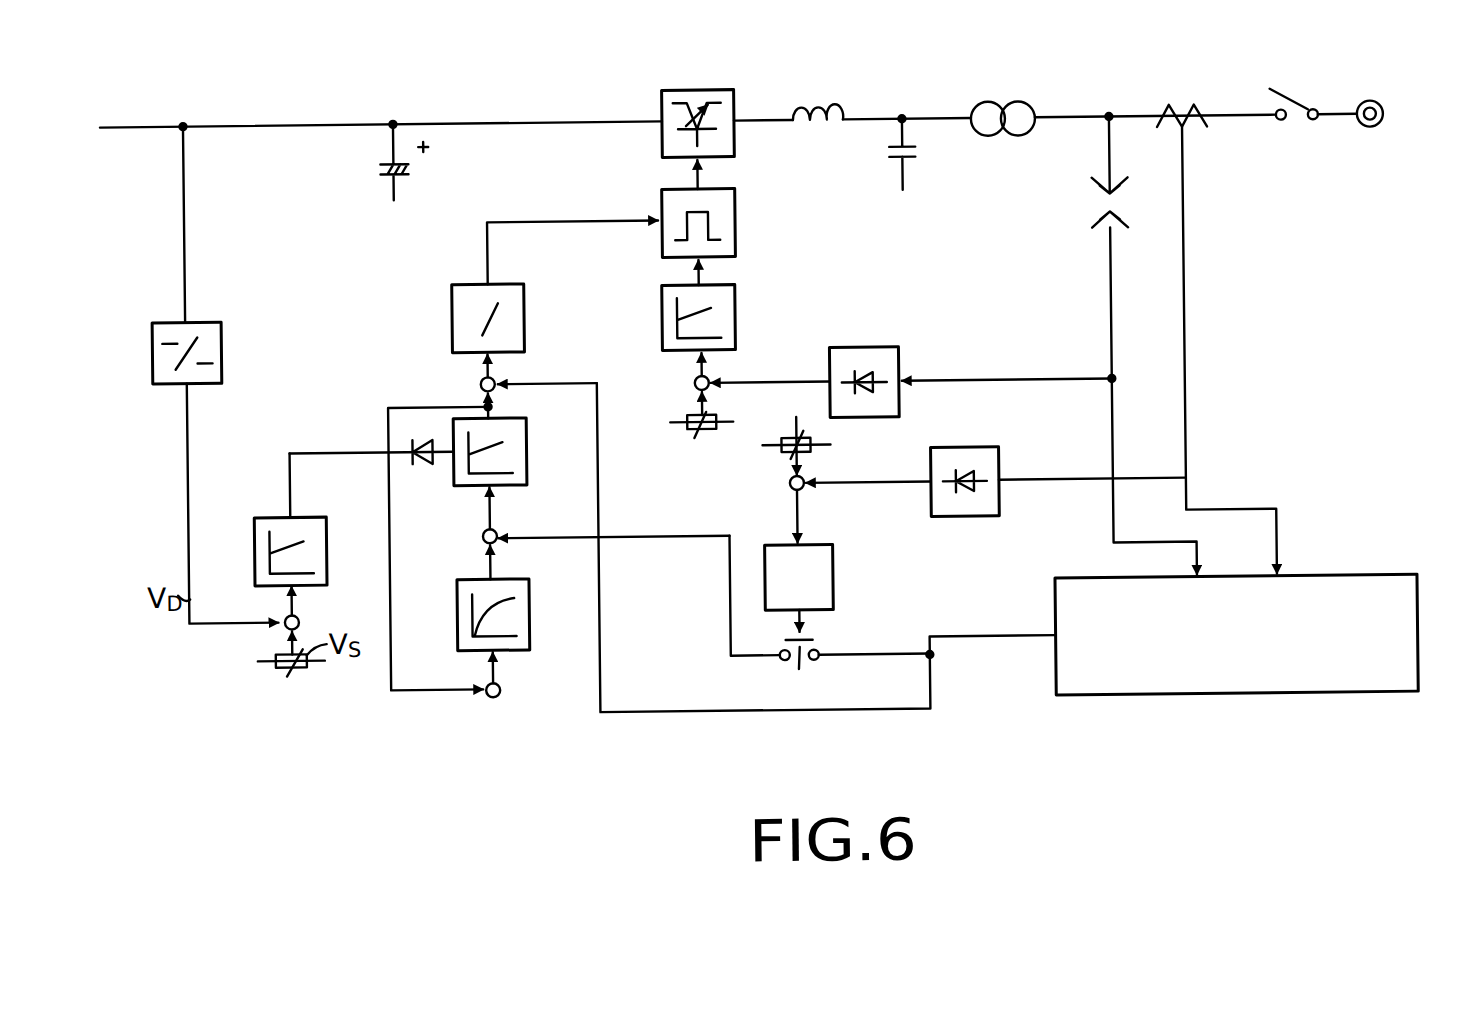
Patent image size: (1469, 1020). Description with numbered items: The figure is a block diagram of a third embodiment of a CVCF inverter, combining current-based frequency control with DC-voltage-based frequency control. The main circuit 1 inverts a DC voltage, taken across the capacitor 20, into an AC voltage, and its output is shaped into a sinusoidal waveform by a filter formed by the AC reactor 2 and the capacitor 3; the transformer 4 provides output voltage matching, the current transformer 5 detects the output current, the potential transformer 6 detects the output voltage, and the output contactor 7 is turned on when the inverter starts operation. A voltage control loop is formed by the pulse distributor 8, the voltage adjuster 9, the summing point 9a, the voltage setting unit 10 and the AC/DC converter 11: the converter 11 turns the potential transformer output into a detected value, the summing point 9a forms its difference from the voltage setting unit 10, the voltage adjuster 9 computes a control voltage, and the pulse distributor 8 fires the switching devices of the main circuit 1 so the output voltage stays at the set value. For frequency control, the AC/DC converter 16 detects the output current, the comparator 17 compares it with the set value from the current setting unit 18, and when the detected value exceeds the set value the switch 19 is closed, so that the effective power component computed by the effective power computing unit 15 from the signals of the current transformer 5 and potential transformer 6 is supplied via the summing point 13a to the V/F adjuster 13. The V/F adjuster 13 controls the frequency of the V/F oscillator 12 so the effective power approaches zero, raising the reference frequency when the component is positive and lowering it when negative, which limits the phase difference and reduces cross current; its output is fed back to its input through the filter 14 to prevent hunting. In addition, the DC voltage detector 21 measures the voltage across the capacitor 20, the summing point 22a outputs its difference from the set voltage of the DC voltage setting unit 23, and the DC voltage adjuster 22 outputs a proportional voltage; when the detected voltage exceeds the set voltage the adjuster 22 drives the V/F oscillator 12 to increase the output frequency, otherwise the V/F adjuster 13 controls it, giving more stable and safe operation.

The main circuit 1 is at (706, 88).
The AC reactor 2 is at (820, 105).
The capacitor 3 is at (889, 149).
The transformer 4 is at (1032, 104).
The current transformer 5 is at (1176, 113).
The potential transformer 6 is at (1098, 198).
The output contactor 7 is at (1290, 100).
The pulse distributor 8 is at (737, 233).
The voltage adjuster 9 is at (736, 321).
The summing point 9a is at (694, 384).
The voltage setting unit 10 is at (691, 433).
The AC/DC converter 11 is at (862, 349).
The V/F oscillator 12 is at (526, 314).
The V/F adjuster 13 is at (527, 448).
The summing point 13a is at (495, 527).
The filter 14 is at (528, 618).
The effective power computing unit 15 is at (1333, 581).
The AC/DC converter 16 is at (968, 450).
The comparator 17 is at (831, 579).
The current setting unit 18 is at (785, 440).
The switch 19 is at (829, 620).
The capacitor 20 is at (370, 160).
The DC voltage detector 21 is at (222, 353).
The DC voltage adjuster 22 is at (253, 557).
The summing point 22a is at (283, 628).
The DC voltage setting unit 23 is at (296, 668).